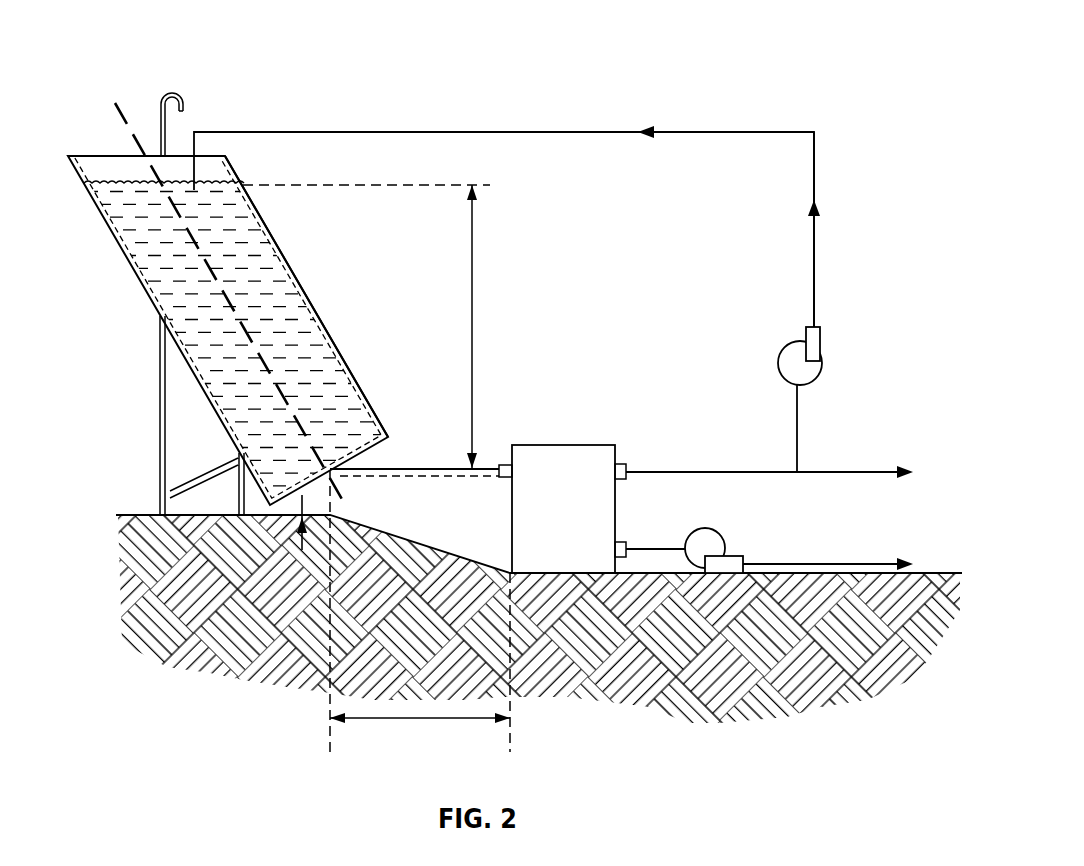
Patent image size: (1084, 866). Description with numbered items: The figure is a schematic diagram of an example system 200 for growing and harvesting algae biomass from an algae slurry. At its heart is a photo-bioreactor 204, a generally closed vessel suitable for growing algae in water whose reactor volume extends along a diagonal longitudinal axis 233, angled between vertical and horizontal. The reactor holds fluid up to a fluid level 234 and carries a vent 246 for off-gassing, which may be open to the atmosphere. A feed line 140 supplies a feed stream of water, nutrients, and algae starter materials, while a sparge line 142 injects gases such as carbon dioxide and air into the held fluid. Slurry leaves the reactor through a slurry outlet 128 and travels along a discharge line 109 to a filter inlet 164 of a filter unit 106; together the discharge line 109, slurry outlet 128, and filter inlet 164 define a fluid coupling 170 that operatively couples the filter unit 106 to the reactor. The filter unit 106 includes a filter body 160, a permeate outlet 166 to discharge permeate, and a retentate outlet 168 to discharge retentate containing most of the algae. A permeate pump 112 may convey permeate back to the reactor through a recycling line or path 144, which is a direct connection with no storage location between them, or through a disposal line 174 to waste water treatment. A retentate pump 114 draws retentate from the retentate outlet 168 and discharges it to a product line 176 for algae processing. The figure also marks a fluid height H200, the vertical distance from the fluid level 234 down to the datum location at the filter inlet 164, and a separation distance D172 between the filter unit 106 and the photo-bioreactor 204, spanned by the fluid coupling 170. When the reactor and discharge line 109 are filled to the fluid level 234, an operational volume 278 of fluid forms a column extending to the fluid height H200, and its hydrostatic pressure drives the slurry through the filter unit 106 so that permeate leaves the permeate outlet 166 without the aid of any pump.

The system 200 is at (124, 58).
The vent 246 is at (173, 95).
The fluid level 234 is at (222, 180).
The operational volume 278 is at (275, 247).
The photo-bioreactor 204 is at (137, 273).
The longitudinal axis 233 is at (231, 298).
The feed line 140 is at (224, 432).
The sparge line 142 is at (302, 543).
The slurry outlet 128 is at (333, 472).
The discharge line 109 is at (412, 468).
The fluid coupling 170 is at (463, 478).
The filter inlet 164 is at (503, 479).
The filter body 160 is at (540, 445).
The filter unit 106 is at (533, 445).
The permeate outlet 166 is at (620, 463).
The retentate outlet 168 is at (620, 541).
The permeate pump 112 is at (822, 345).
The recycling line or path 144 is at (814, 247).
The disposal line 174 is at (836, 471).
The retentate pump 114 is at (713, 528).
The product line 176 is at (817, 562).
The fluid height H200 is at (472, 320).
The separation distance D172 is at (422, 721).